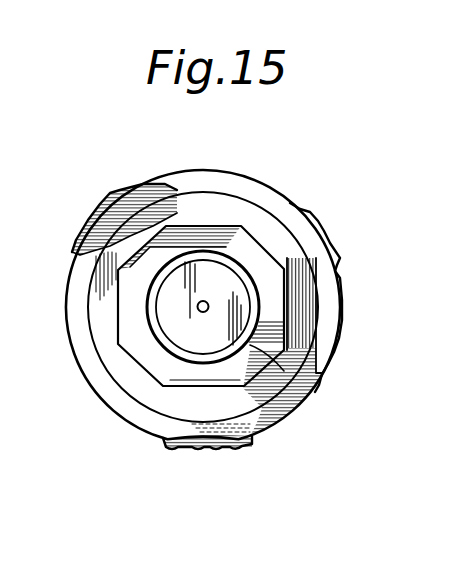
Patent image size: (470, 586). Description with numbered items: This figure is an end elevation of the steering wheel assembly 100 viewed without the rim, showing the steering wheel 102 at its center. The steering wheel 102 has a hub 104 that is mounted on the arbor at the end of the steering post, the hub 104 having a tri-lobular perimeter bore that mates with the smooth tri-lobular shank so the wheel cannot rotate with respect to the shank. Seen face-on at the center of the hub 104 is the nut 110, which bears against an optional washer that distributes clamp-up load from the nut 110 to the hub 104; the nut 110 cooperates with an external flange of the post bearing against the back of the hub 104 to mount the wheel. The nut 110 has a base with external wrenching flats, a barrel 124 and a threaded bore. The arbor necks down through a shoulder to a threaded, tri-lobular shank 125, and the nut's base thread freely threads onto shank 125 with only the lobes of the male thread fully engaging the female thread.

The steering wheel assembly 100 is at (298, 170).
The steering wheel 102 is at (177, 447).
The hub 104 is at (328, 303).
The nut 110 is at (268, 273).
The barrel 124 is at (327, 370).
The threaded tri-lobular shank 125 is at (240, 298).